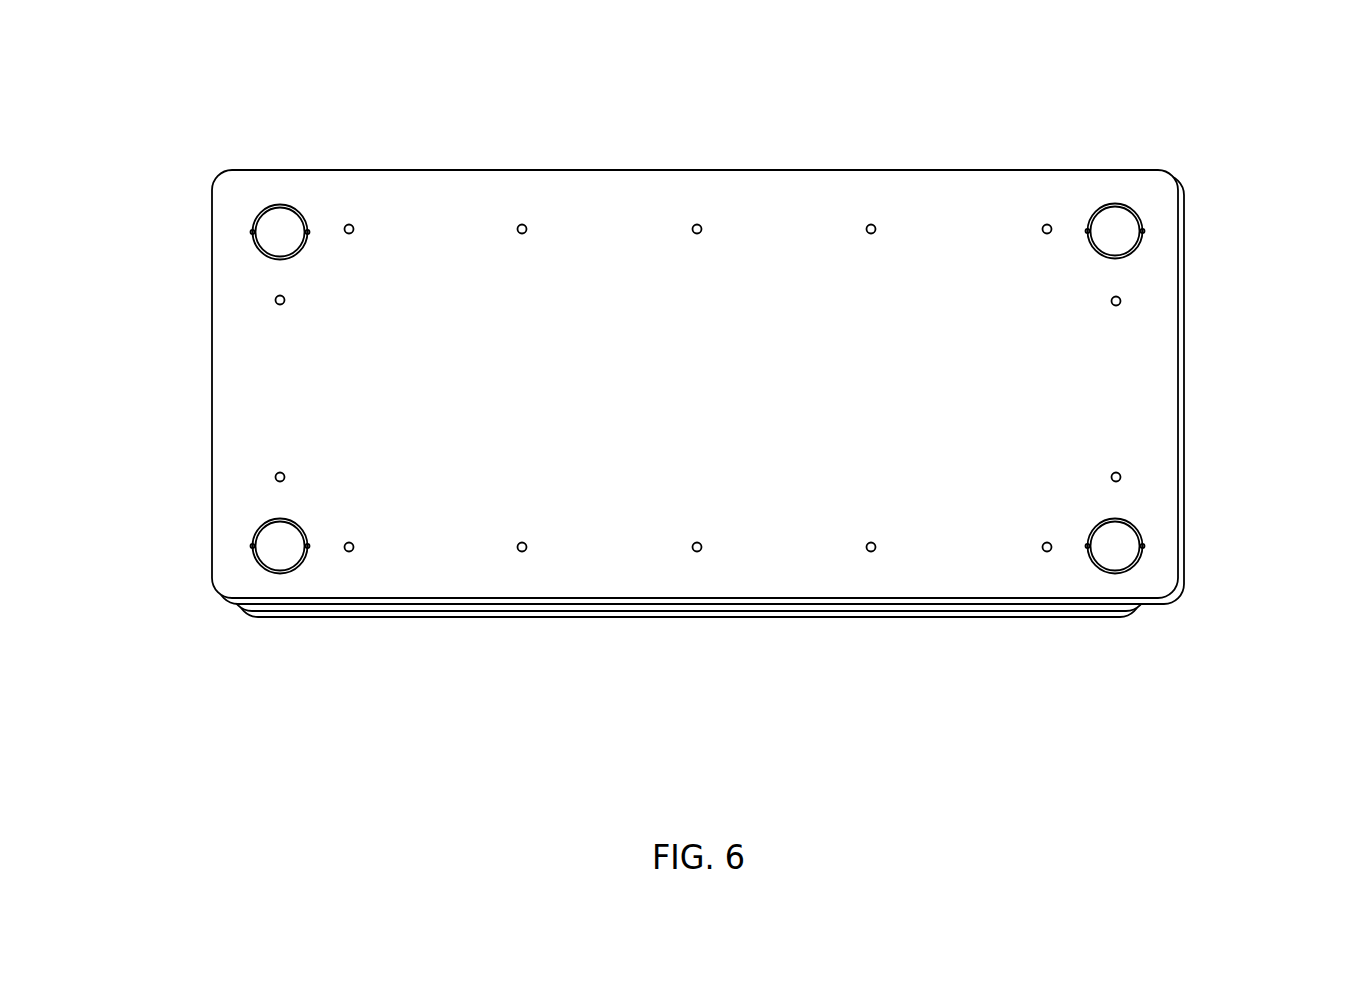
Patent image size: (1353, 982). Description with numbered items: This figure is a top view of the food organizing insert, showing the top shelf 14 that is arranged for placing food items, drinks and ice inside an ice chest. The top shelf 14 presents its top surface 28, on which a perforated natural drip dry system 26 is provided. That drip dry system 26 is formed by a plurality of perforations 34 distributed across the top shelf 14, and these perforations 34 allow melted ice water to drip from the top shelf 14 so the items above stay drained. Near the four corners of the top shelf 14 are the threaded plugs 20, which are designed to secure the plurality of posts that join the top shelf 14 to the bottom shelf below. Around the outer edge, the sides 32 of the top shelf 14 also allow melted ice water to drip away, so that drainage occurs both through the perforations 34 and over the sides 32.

The top shelf 14 is at (920, 180).
The threaded plugs 20 is at (283, 243).
The perforated natural drip dry system 26 is at (690, 226).
The top surface 28 is at (772, 198).
The sides 32 is at (1065, 170).
The perforations 34 is at (350, 225).